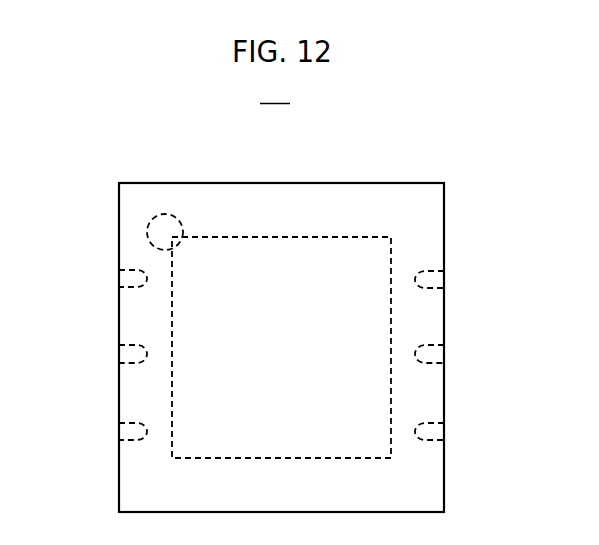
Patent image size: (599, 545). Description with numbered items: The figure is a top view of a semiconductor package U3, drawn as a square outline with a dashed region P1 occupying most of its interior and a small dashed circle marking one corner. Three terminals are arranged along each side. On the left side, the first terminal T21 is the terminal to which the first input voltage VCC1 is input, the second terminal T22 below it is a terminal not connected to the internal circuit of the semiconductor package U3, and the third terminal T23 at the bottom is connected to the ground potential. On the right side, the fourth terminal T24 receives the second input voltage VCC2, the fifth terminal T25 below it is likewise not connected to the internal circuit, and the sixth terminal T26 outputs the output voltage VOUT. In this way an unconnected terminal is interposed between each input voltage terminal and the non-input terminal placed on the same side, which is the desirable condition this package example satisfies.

The semiconductor package U3 is at (281, 296).
The exposed pad P1 is at (350, 237).
The first terminal T21 is at (119, 280).
The second terminal T22 is at (119, 357).
The third terminal T23 is at (119, 435).
The fourth terminal T24 is at (444, 278).
The fifth terminal T25 is at (444, 354).
The sixth terminal T26 is at (444, 431).